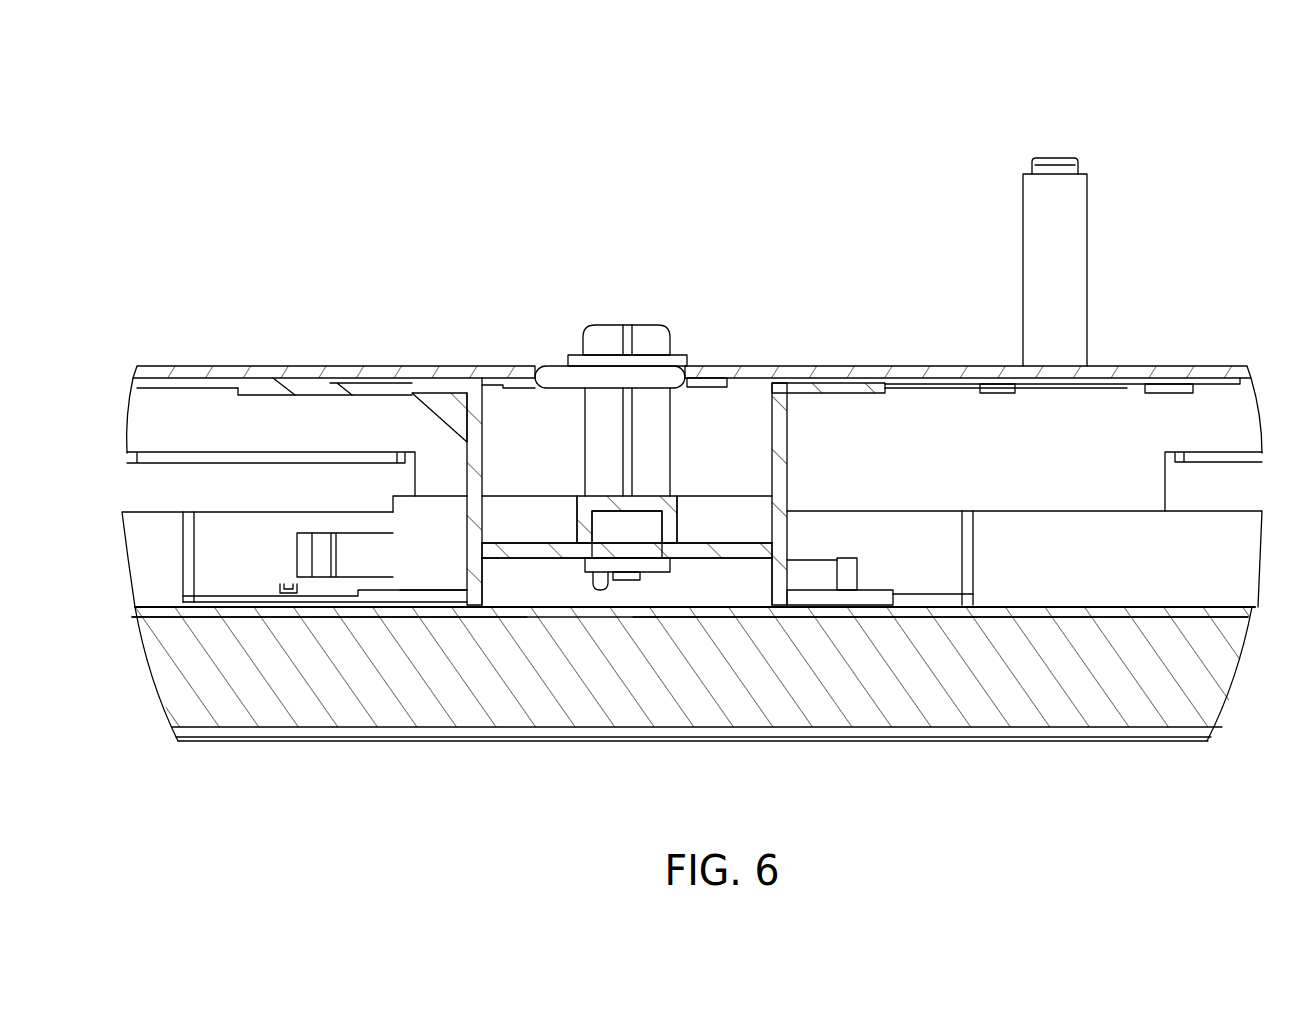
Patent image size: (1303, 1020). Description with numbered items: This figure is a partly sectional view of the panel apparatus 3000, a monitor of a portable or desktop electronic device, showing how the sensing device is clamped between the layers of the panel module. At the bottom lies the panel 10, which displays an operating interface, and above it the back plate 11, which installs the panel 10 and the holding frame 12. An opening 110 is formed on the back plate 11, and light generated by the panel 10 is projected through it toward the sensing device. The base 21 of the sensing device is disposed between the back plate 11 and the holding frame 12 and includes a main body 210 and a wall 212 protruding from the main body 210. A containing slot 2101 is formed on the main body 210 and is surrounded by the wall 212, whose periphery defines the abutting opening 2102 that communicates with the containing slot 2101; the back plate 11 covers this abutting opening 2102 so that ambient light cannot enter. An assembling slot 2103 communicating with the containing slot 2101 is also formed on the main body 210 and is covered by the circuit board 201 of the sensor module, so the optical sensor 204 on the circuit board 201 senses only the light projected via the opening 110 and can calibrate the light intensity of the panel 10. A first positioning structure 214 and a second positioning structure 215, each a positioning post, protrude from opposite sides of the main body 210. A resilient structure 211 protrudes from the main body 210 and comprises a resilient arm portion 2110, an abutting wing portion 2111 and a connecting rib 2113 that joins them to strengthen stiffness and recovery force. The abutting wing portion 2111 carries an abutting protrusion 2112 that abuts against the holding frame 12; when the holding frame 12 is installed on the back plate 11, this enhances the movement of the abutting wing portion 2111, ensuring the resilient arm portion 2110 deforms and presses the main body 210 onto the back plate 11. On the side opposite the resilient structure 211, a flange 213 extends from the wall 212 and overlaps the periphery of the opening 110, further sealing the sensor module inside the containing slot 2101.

The panel apparatus 3000 is at (1134, 108).
The panel 10 is at (262, 707).
The back plate 11 is at (238, 610).
The opening 110 is at (568, 612).
The holding frame 12 is at (866, 372).
The base 21 is at (924, 298).
The main body 210 is at (912, 496).
The resilient structure 211 is at (398, 388).
The resilient arm portion 2110 is at (477, 440).
The abutting wing portion 2111 is at (360, 388).
The abutting protrusion 2112 is at (291, 378).
The connecting rib 2113 is at (448, 392).
The wall 212 is at (778, 597).
The flange 213 is at (857, 597).
The containing slot 2101 is at (502, 585).
The abutting opening 2102 is at (762, 608).
The assembling slot 2103 is at (645, 538).
The first positioning structure 214 is at (605, 398).
The second positioning structure 215 is at (603, 592).
The circuit board 201 is at (658, 568).
The optical sensor 204 is at (630, 574).